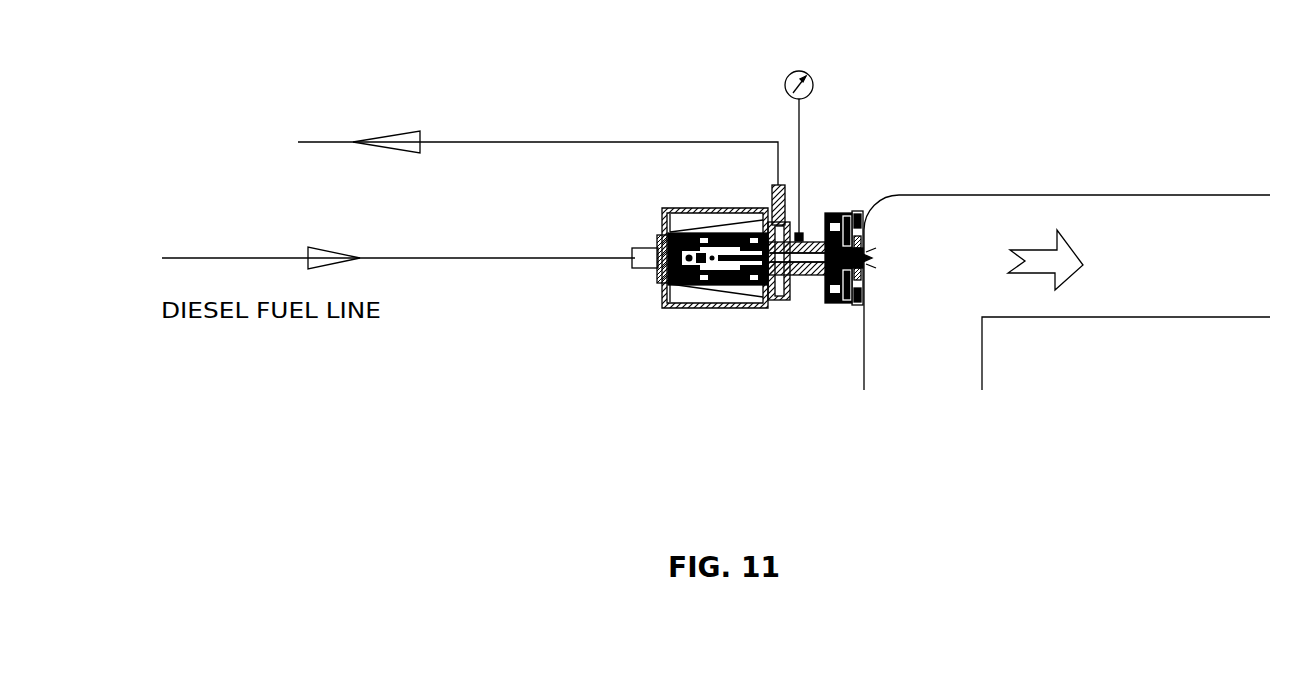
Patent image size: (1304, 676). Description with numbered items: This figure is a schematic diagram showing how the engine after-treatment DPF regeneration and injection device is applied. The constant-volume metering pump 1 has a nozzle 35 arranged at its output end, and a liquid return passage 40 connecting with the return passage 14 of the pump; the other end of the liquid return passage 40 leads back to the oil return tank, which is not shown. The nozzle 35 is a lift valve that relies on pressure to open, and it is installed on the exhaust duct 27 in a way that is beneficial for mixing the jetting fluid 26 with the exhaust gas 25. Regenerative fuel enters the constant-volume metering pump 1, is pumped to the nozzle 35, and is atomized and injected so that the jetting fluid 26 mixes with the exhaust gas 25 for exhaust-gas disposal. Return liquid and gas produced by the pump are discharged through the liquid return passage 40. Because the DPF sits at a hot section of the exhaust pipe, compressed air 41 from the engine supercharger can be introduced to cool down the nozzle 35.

The constant-volume metering pump 1 is at (662, 218).
The return passage 14 is at (773, 196).
The exhaust gas 25 is at (1060, 226).
The jetting fluid 26 is at (873, 248).
The exhaust duct 27 is at (975, 195).
The nozzle 35 is at (873, 265).
The liquid return passage 40 is at (606, 142).
The compressed air 41 is at (812, 90).